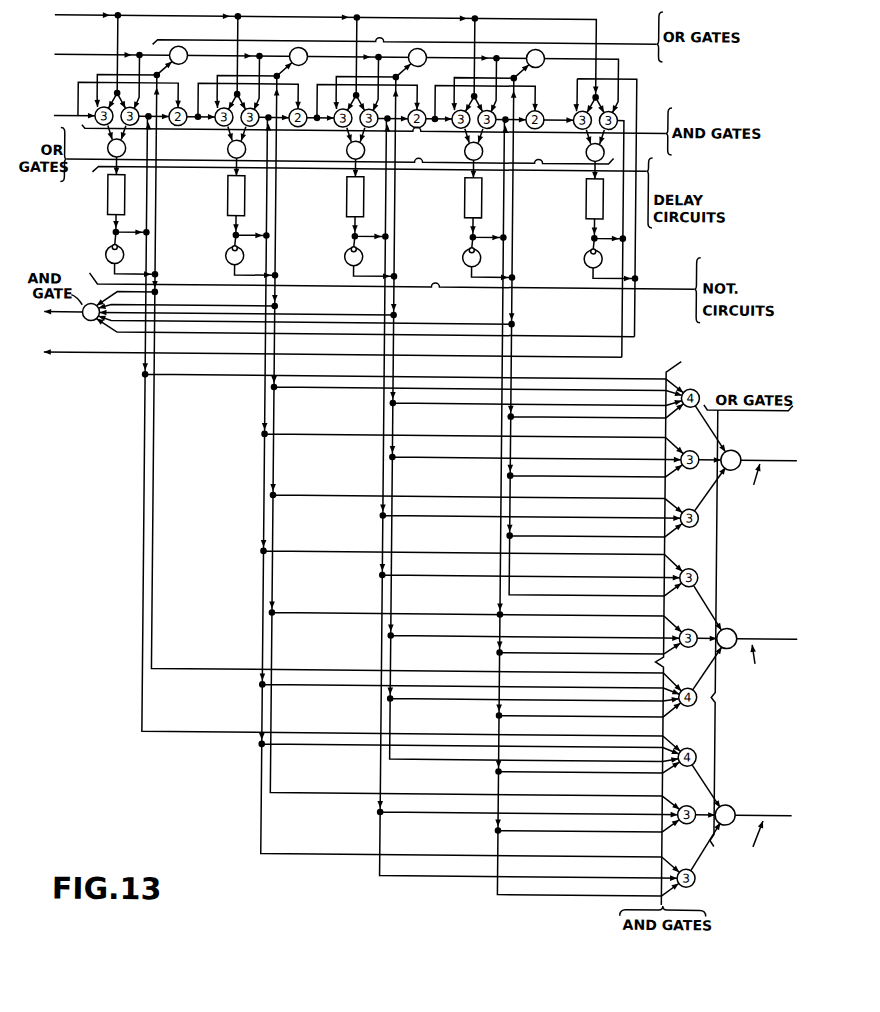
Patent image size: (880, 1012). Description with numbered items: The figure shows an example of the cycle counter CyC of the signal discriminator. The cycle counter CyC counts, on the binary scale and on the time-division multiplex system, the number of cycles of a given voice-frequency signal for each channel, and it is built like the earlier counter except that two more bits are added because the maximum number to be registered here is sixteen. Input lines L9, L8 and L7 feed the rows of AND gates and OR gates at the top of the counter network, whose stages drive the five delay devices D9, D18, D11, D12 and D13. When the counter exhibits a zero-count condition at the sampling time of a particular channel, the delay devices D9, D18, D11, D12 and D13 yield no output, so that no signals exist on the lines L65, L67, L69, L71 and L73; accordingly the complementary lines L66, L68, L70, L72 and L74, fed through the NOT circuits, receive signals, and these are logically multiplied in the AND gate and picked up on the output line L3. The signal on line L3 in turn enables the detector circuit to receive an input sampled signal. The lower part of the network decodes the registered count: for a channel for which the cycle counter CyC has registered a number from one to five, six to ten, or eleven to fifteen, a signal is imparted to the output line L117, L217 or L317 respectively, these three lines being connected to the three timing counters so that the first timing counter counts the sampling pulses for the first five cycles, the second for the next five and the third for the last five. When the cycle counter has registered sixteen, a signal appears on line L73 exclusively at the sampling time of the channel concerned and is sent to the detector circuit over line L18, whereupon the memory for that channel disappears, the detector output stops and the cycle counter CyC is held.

The line L9 is at (311, 53).
The line L8 is at (323, 80).
The line L7 is at (300, 119).
The line L3 is at (59, 312).
The line L18 is at (319, 354).
The delay device D9 is at (104, 194).
The delay device D18 is at (223, 195).
The delay device D11 is at (343, 196).
The delay device D12 is at (462, 198).
The delay device D13 is at (582, 199).
The line L65 is at (131, 225).
The line L66 is at (146, 257).
The line L67 is at (251, 227).
The line L68 is at (266, 259).
The line L69 is at (370, 228).
The line L70 is at (386, 260).
The line L71 is at (488, 229).
The line L72 is at (503, 261).
The line L73 is at (608, 230).
The line L74 is at (626, 262).
The line L117 is at (765, 470).
The line L217 is at (758, 652).
The line L317 is at (760, 831).
The cycle counter CyC is at (176, 783).